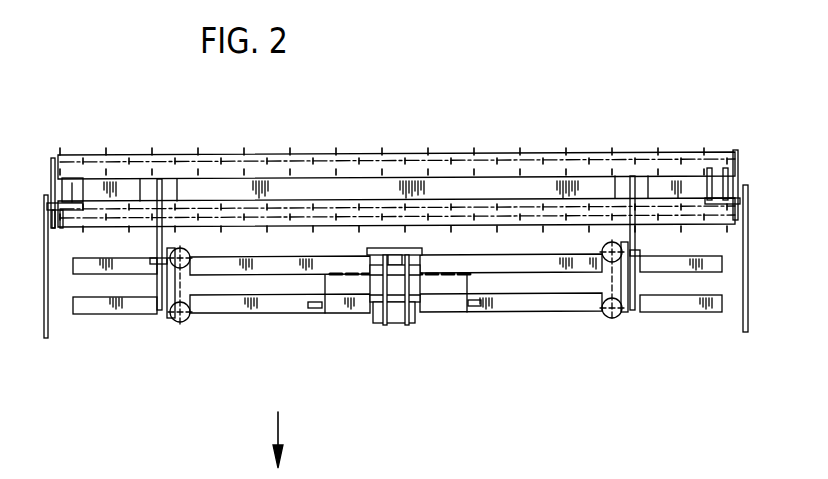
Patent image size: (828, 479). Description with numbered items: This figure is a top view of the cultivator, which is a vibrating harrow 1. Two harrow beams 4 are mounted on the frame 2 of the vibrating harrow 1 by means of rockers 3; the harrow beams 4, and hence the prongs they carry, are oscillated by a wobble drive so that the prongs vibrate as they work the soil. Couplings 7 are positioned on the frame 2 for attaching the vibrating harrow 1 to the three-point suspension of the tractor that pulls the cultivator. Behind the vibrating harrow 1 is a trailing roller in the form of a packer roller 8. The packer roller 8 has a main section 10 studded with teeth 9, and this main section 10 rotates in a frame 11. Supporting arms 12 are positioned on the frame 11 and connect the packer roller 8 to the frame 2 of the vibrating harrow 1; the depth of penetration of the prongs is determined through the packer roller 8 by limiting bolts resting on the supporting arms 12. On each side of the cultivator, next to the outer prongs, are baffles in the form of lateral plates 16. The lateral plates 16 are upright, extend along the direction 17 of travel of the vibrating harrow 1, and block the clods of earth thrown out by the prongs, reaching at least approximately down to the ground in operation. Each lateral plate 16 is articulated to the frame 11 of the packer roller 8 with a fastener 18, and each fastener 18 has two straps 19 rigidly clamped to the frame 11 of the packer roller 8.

The vibrating harrow 1 is at (500, 284).
The frame 2 is at (257, 284).
The rockers 3 is at (181, 316).
The harrow beams 4 is at (103, 306).
The couplings 7 is at (315, 308).
The packer roller 8 is at (645, 165).
The teeth 9 is at (127, 168).
The main section 10 is at (346, 162).
The frame 11 is at (207, 193).
The supporting arms 12 is at (158, 238).
The lateral plates 16 is at (48, 325).
The direction of travel 17 is at (286, 432).
The fastener 18 is at (71, 222).
The straps 19 is at (70, 183).